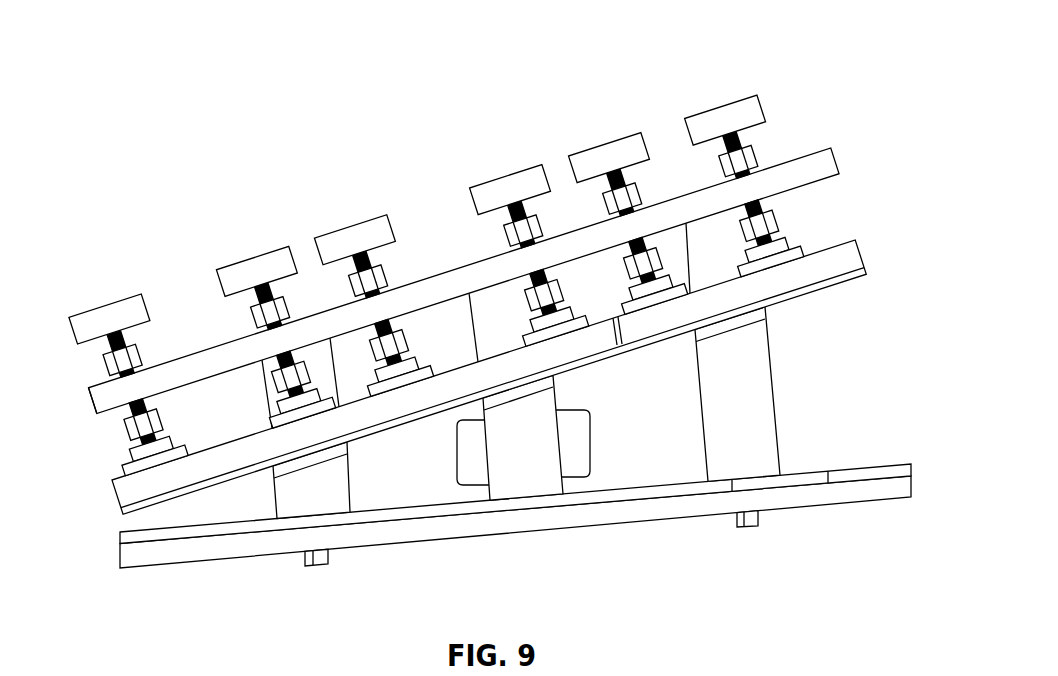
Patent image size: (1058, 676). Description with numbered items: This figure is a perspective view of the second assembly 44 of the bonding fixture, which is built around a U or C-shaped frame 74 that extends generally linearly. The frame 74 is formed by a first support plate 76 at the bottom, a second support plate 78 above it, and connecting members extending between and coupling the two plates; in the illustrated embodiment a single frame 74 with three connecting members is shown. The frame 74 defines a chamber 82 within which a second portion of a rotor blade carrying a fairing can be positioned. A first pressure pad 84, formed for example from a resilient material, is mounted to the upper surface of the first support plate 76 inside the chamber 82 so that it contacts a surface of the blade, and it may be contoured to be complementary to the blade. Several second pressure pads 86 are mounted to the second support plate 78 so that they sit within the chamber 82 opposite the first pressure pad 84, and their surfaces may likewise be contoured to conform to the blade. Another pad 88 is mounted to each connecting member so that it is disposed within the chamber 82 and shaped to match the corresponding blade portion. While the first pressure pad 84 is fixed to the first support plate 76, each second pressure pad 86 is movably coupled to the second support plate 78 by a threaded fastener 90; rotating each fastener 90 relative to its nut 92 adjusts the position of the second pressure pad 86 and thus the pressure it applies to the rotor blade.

The second assembly 44 is at (848, 46).
The frame 74 is at (445, 266).
The first support plate 76 is at (557, 517).
The second support plate 78 is at (97, 400).
The chamber 82 is at (655, 413).
The first pressure pad 84 is at (810, 472).
The second pressure pad 86 is at (855, 258).
The pad 88 is at (303, 500).
The threaded fastener 90 is at (318, 232).
The nut 92 is at (253, 312).